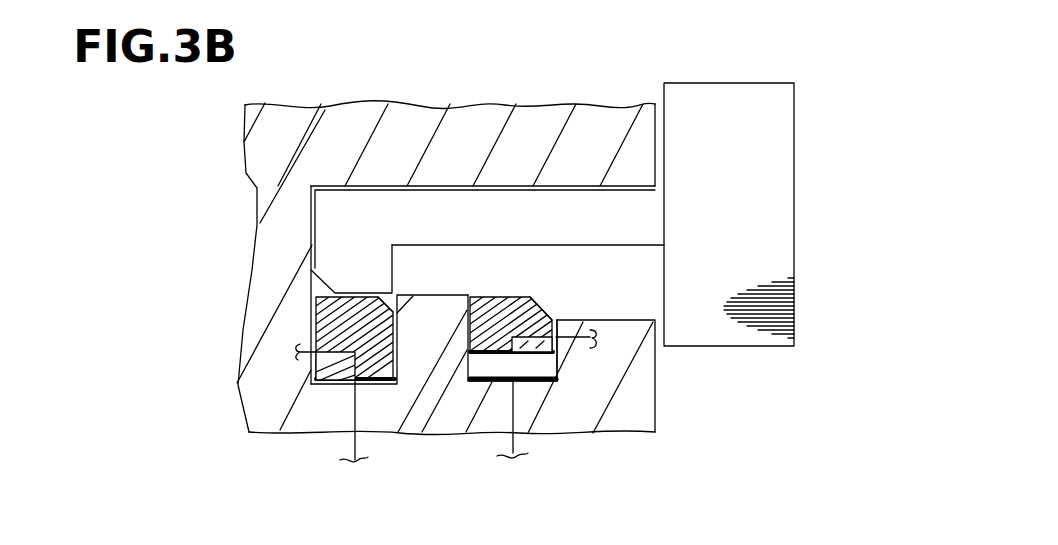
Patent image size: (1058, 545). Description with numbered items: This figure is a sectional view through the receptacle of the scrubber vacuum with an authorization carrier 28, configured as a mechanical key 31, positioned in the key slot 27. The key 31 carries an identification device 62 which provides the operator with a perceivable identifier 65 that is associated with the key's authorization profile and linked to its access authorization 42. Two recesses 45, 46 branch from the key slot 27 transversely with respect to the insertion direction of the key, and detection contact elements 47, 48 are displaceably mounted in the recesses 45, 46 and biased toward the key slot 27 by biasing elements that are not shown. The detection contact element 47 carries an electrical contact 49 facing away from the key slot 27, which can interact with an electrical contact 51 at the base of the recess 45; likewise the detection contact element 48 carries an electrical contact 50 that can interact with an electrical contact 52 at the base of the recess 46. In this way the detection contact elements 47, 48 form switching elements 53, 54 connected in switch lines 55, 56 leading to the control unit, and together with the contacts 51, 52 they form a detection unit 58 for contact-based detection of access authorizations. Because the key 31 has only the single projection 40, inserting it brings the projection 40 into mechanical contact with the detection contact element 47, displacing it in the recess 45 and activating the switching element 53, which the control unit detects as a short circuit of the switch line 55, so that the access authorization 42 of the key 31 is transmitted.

The authorization carrier 28 is at (779, 219).
The mechanical key 31 is at (775, 183).
The identification device 62 is at (775, 288).
The identifier 65 is at (775, 328).
The key slot 27 is at (660, 300).
The access authorization 42 is at (332, 242).
The projection 40 is at (330, 263).
The detection contact element 47 is at (308, 308).
The switching element 53 is at (355, 318).
The recess 45 is at (388, 303).
The electrical contact 49 is at (393, 362).
The electrical contact 51 is at (320, 385).
The switch line 55 is at (348, 447).
The electrical contact 50 is at (470, 385).
The detection contact element 48 is at (540, 360).
The switching element 54 is at (495, 317).
The electrical contact 52 is at (497, 385).
The detection unit 58 is at (560, 308).
The switch line 56 is at (513, 413).
The recess 46 is at (547, 403).